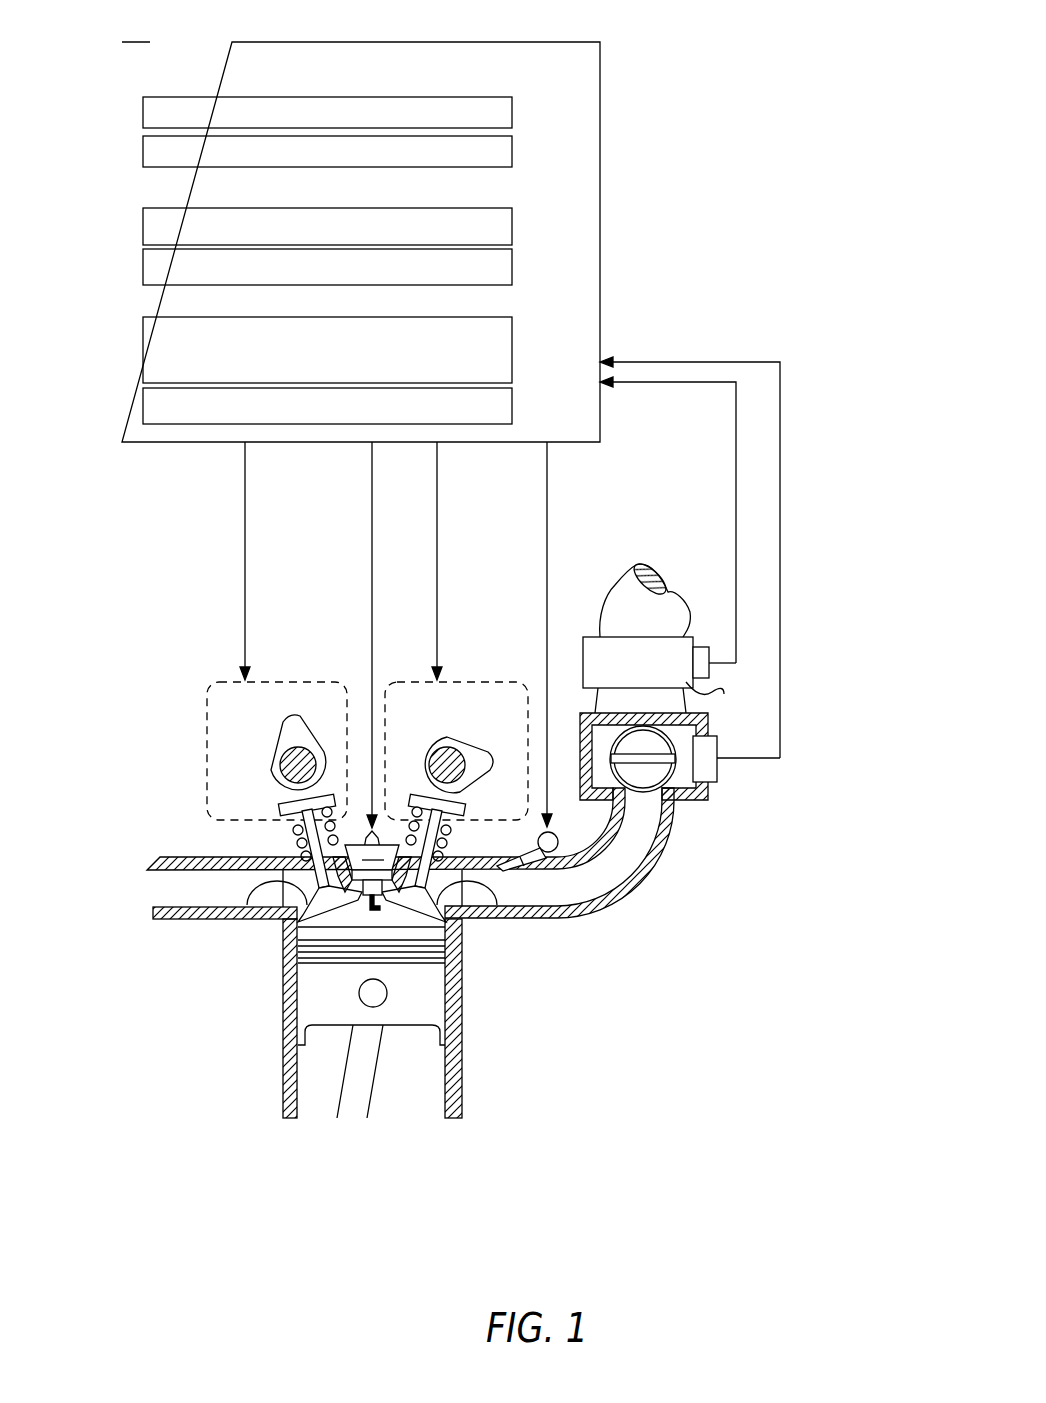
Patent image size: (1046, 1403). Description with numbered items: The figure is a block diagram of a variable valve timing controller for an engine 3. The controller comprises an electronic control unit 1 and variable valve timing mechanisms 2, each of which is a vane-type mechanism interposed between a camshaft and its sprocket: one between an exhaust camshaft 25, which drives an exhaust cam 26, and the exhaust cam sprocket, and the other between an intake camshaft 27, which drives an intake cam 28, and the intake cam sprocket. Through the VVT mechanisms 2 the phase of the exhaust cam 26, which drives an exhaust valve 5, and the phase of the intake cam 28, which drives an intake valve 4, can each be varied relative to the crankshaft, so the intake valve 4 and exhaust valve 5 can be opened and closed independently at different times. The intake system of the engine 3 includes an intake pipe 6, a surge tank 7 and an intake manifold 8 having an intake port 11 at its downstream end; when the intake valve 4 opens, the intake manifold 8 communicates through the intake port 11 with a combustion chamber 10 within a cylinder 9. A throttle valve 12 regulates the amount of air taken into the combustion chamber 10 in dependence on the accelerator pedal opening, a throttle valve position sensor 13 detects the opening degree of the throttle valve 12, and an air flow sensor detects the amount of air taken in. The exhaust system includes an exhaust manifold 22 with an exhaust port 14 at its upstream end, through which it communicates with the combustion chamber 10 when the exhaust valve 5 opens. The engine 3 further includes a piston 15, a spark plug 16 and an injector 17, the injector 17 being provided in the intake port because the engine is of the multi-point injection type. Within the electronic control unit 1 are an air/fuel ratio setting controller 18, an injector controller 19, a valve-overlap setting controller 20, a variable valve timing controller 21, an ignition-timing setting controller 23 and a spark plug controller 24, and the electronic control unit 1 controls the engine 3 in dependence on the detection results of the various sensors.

The electronic control unit (ECU) 1 is at (260, 44).
The variable valve timing mechanism 2 is at (207, 716).
The engine 3 is at (666, 1034).
The intake valve 4 is at (403, 986).
The exhaust valve 5 is at (283, 945).
The intake pipe 6 is at (633, 573).
The surge tank 7 is at (688, 800).
The intake manifold 8 is at (655, 857).
The cylinder 9 is at (460, 1108).
The combustion chamber 10 is at (450, 967).
The intake port 11 is at (497, 905).
The throttle valve 12 is at (638, 782).
The throttle valve position sensor 13 is at (712, 780).
The exhaust port 14 is at (278, 886).
The piston 15 is at (312, 1003).
The spark plug 16 is at (348, 840).
The injector 17 is at (540, 868).
The air/fuel ratio setting controller 18 is at (513, 106).
The injector controller 19 is at (513, 146).
The valve-overlap setting controller 20 is at (513, 220).
The variable valve timing controller 21 is at (513, 262).
The exhaust manifold 22 is at (162, 857).
The ignition-timing setting controller 23 is at (513, 337).
The spark plug controller 24 is at (513, 397).
The exhaust camshaft 25 is at (280, 760).
The exhaust cam 26 is at (303, 740).
The intake camshaft 27 is at (436, 752).
The intake cam 28 is at (468, 748).